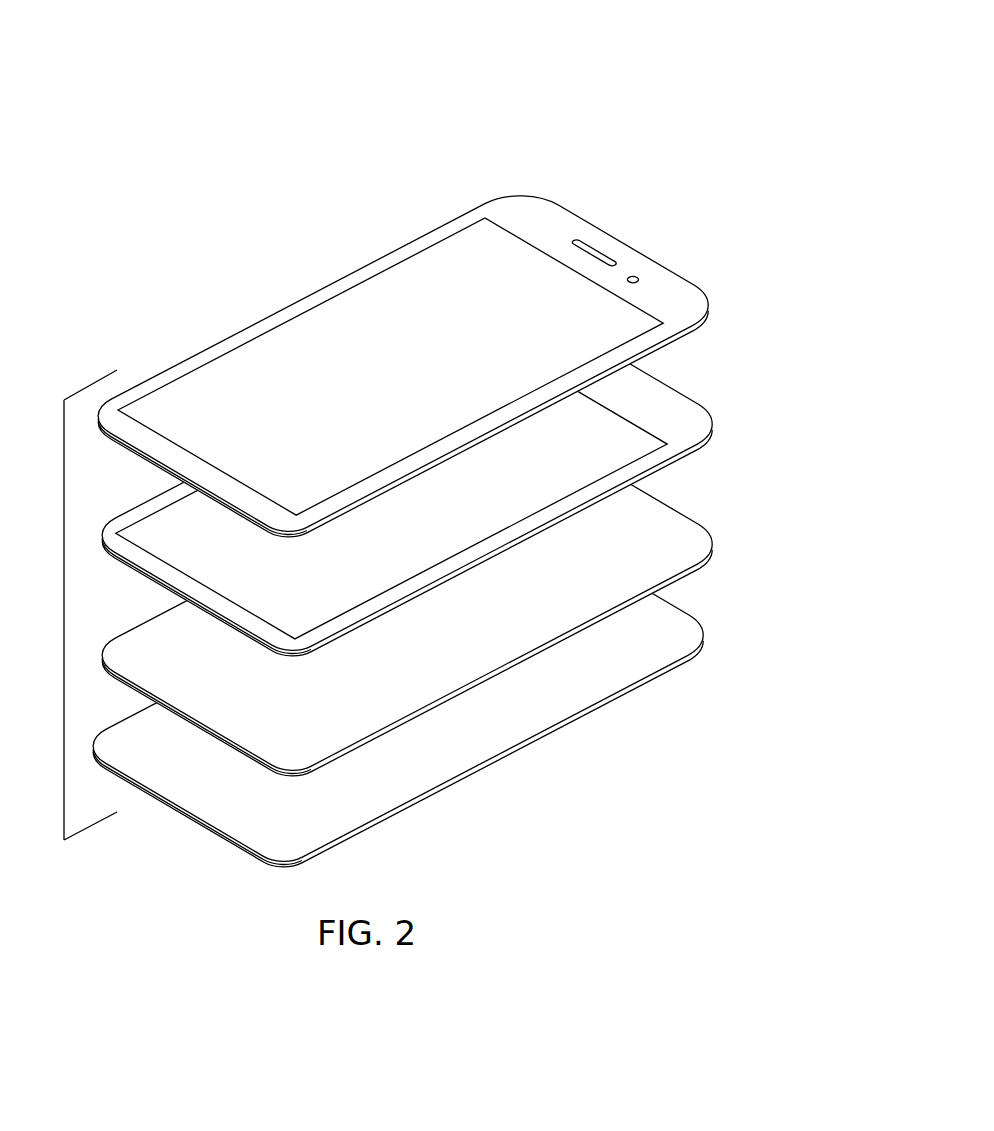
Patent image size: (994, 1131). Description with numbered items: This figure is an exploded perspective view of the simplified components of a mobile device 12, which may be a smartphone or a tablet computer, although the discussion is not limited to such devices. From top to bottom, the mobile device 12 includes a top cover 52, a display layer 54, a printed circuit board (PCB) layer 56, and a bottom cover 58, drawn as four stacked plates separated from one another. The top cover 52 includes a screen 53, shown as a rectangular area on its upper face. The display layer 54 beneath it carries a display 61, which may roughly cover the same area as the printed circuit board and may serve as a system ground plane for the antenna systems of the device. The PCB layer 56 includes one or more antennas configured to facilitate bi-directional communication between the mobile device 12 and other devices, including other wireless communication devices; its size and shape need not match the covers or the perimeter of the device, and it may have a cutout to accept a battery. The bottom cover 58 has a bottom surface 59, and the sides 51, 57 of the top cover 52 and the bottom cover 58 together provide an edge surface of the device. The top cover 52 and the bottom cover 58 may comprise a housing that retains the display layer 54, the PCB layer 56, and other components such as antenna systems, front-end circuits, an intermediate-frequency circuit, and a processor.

The mobile device 12 is at (694, 58).
The side of the top cover 51 is at (728, 303).
The top cover 52 is at (670, 268).
The screen 53 is at (418, 367).
The display layer 54 is at (703, 403).
The printed circuit board (PCB) layer 56 is at (705, 520).
The side of the bottom cover 57 is at (708, 652).
The bottom cover 58 is at (500, 757).
The bottom surface 59 is at (647, 690).
The display 61 is at (458, 529).